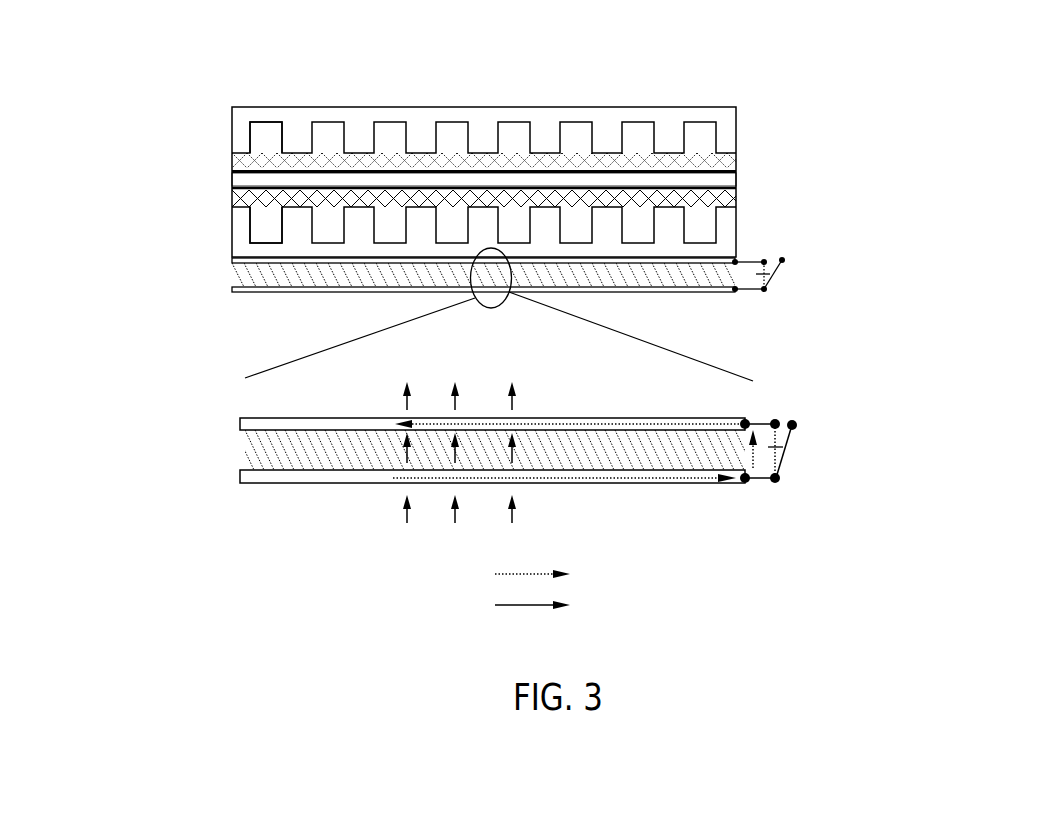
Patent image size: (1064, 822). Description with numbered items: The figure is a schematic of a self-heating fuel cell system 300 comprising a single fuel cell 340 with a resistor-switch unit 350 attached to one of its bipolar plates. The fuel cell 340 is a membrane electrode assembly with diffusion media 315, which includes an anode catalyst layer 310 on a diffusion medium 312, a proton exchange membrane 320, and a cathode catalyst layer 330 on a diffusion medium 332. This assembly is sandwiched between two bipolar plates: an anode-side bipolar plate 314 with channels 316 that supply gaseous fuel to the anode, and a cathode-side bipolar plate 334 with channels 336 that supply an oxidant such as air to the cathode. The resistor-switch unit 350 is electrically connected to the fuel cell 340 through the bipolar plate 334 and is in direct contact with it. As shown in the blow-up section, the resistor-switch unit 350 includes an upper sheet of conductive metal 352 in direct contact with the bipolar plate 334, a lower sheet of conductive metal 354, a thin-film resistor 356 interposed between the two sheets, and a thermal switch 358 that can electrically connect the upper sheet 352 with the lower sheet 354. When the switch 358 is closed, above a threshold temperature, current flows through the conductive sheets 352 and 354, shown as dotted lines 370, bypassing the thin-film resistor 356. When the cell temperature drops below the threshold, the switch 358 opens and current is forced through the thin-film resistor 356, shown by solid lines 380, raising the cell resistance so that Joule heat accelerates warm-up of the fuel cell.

The fuel cell system 300 is at (454, 100).
The fuel cell 340 is at (225, 133).
The bipolar plate 314 is at (723, 126).
The channels 316 is at (257, 138).
The diffusion medium 312 is at (732, 162).
The anode catalyst layer 310 is at (735, 172).
The proton exchange membrane 320 is at (731, 179).
The cathode catalyst layer 330 is at (709, 189).
The diffusion medium 332 is at (678, 200).
The bipolar plate 334 is at (733, 240).
The channels 336 is at (262, 217).
The membrane electrode assembly with diffusion media 315 is at (622, 189).
The resistor-switch unit 350 is at (524, 368).
The upper sheet of conductive metal 352 is at (232, 260).
The thin-film resistor 356 is at (240, 283).
The lower sheet of conductive metal 354 is at (232, 289).
The thermal switch 358 is at (771, 275).
The dotted lines 370 is at (810, 573).
The solid lines 380 is at (797, 605).